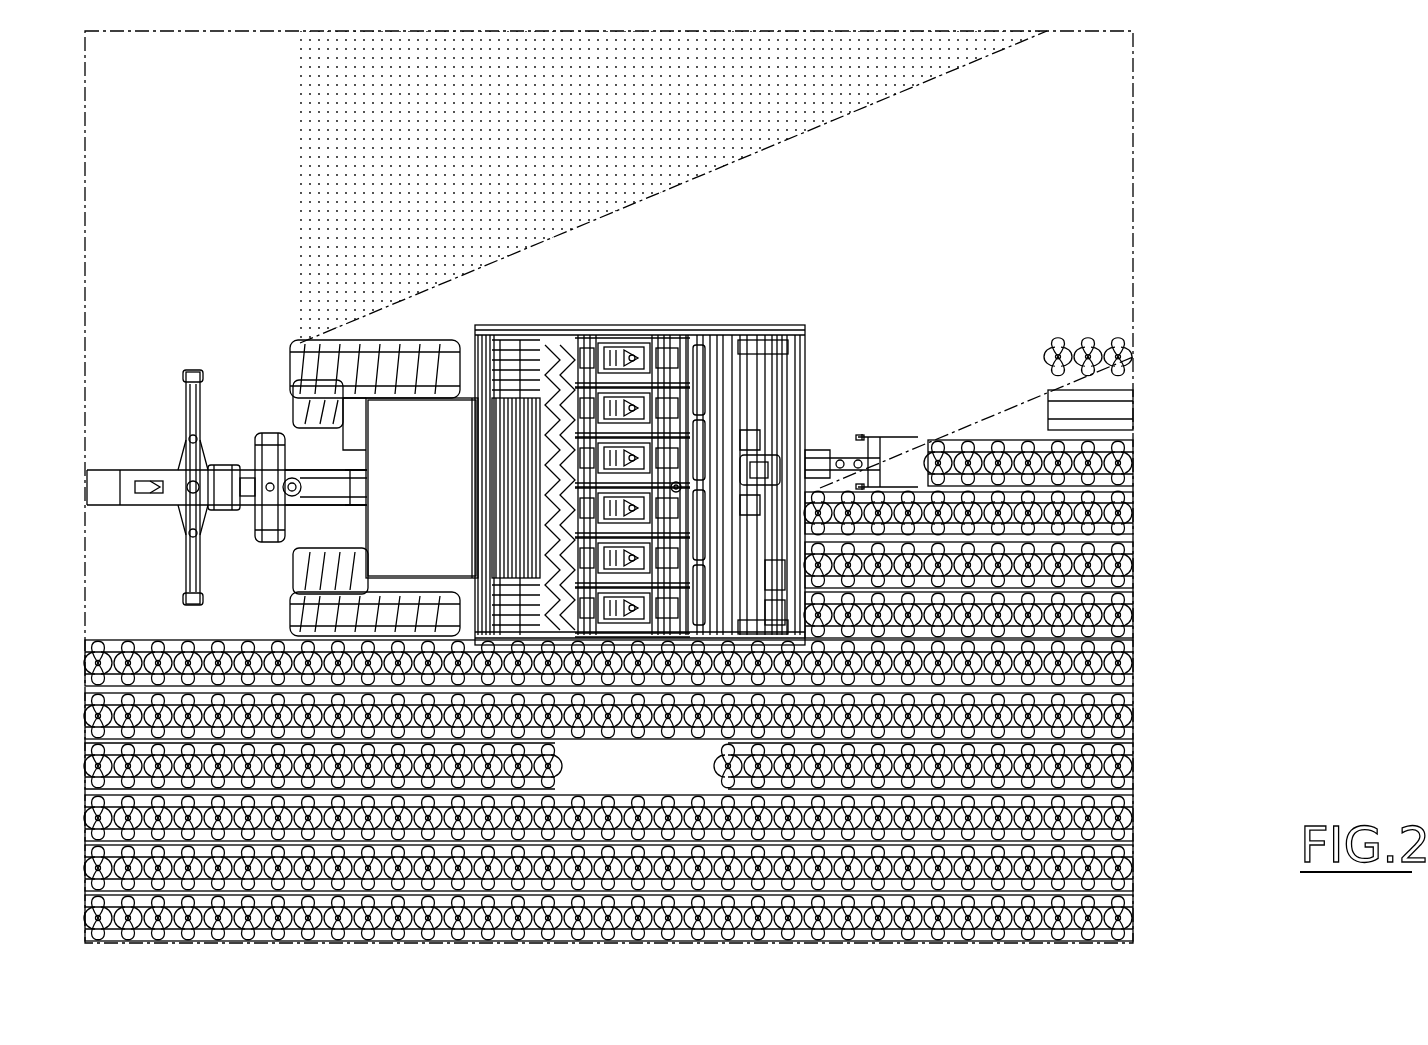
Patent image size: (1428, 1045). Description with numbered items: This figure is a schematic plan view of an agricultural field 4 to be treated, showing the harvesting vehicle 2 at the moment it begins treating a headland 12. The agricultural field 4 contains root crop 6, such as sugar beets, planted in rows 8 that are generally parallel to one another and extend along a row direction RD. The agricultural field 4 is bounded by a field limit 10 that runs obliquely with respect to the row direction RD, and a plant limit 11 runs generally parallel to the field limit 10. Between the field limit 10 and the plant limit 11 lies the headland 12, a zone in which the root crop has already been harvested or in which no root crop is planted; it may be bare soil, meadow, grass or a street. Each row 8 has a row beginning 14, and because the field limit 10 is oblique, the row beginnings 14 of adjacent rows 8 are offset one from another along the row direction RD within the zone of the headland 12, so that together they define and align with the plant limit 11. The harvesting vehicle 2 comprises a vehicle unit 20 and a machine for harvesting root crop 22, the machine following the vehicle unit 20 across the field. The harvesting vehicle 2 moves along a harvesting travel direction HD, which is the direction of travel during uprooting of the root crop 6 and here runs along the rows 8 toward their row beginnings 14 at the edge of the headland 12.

The harvesting vehicle 2 is at (455, 195).
The agricultural field 4 is at (1115, 610).
The root crop 6 is at (1115, 920).
The rows 8 is at (1141, 442).
The field limit 10 is at (877, 102).
The plant limit 11 is at (948, 445).
The headland 12 is at (921, 262).
The row beginning 14 is at (1032, 400).
The vehicle unit 20 is at (241, 385).
The machine for harvesting root crop 22 is at (600, 277).
The harvesting travel direction HD is at (550, 297).
The row direction RD is at (705, 768).